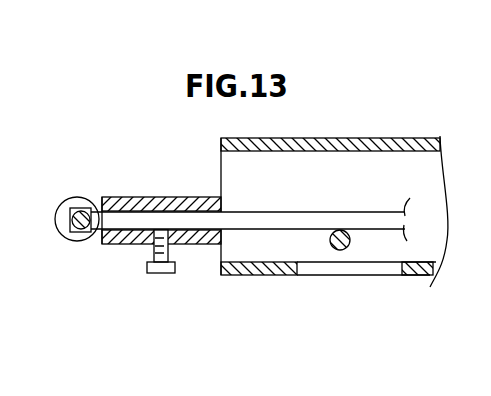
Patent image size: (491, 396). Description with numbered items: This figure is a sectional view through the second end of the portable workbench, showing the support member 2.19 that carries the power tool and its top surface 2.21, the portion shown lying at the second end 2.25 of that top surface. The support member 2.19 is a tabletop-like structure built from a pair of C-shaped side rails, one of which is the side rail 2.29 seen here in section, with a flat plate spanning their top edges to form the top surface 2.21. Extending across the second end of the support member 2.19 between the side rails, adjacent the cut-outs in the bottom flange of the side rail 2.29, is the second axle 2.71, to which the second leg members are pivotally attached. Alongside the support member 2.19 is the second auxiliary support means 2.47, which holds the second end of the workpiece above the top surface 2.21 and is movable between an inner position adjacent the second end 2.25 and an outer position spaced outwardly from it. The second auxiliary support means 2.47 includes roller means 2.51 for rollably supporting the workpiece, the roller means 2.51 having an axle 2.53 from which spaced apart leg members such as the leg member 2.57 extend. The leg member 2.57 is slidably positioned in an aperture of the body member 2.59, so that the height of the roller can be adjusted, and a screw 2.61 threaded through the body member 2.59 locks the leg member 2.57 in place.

The support member 2.19 is at (313, 138).
The top surface 2.21 is at (378, 138).
The second end 2.25 is at (244, 143).
The side rail 2.29 is at (250, 250).
The second auxiliary support means 2.47 is at (104, 259).
The roller means 2.51 is at (77, 205).
The axle 2.53 is at (80, 228).
The leg member 2.57 is at (305, 221).
The body member 2.59 is at (123, 238).
The screw 2.61 is at (165, 273).
The second axle 2.71 is at (343, 250).